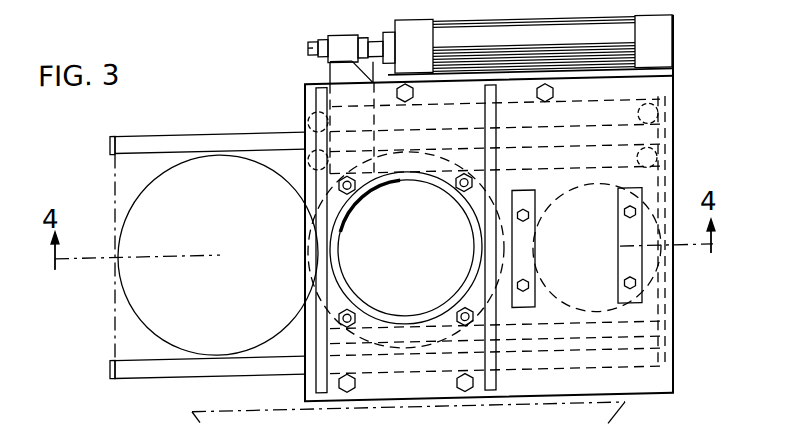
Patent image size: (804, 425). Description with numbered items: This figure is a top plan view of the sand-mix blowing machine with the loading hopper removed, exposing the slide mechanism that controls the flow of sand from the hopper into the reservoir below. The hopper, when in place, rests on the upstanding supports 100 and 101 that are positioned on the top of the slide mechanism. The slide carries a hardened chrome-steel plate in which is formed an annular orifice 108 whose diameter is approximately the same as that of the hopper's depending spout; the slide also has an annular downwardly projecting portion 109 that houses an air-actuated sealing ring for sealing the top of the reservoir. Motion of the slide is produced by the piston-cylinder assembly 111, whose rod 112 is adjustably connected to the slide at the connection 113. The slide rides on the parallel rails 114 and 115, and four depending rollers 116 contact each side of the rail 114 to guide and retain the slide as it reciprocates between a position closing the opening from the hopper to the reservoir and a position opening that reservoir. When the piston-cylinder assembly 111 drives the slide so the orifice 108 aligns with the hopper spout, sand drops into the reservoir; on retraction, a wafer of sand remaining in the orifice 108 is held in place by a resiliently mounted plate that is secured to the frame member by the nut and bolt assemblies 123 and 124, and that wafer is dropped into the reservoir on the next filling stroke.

The upstanding support 100 is at (318, 375).
The upstanding support 101 is at (497, 383).
The annular orifice 108 is at (598, 296).
The annular downwardly projecting portion 109 is at (335, 297).
The piston-cylinder assembly 111 is at (640, 55).
The rod 112 is at (306, 44).
The adjustable connection 113 is at (330, 66).
The rail 114 is at (128, 137).
The rail 115 is at (132, 362).
The depending rollers 116 is at (652, 119).
The nut and bolt assembly 123 is at (526, 282).
The nut and bolt assembly 124 is at (629, 285).